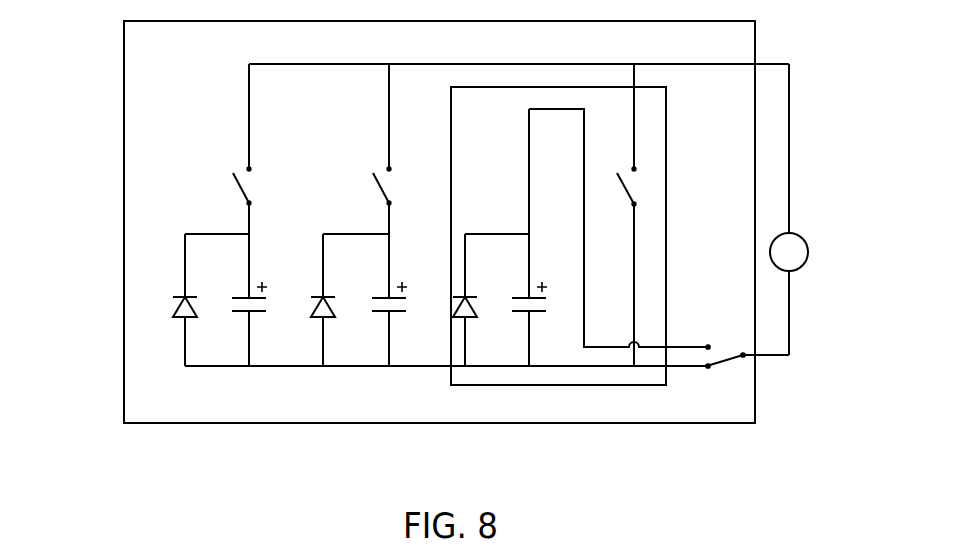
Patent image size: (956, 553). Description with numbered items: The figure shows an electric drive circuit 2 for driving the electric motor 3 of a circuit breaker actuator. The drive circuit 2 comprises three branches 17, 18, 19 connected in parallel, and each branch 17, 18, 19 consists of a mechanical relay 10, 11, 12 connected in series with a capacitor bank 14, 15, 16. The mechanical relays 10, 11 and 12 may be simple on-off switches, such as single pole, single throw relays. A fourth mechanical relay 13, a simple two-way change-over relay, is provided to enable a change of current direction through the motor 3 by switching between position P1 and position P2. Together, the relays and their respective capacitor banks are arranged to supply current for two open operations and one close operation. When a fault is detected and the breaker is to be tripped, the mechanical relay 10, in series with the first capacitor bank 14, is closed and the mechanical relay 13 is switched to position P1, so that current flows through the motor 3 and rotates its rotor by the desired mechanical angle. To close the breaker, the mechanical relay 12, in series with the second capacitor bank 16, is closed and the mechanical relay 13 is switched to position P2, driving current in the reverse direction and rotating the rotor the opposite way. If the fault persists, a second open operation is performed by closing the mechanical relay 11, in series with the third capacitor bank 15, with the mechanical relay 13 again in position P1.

The electric drive circuit 2 is at (138, 63).
The motor 3 is at (792, 243).
The mechanical relay 10 is at (250, 184).
The mechanical relay 11 is at (390, 184).
The mechanical relay 12 is at (633, 183).
The mechanical relay 13 is at (733, 360).
The first capacitor bank 14 is at (270, 281).
The third capacitor bank 15 is at (410, 281).
The second capacitor bank 16 is at (545, 281).
The branch 17 is at (249, 124).
The branch 18 is at (389, 124).
The branch 19 is at (666, 123).
The position P1 is at (708, 369).
The position P2 is at (708, 345).